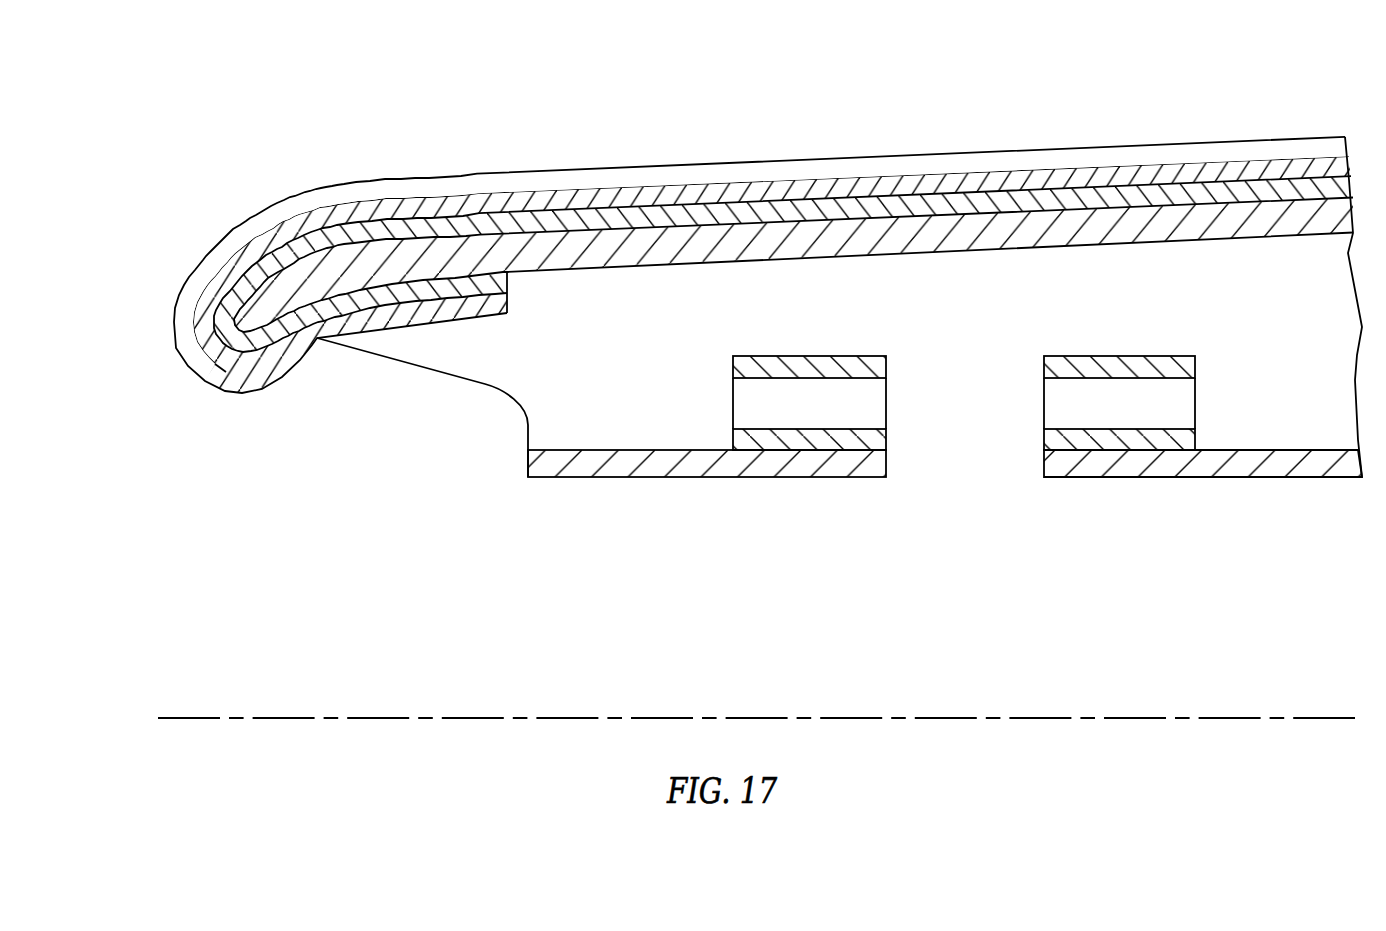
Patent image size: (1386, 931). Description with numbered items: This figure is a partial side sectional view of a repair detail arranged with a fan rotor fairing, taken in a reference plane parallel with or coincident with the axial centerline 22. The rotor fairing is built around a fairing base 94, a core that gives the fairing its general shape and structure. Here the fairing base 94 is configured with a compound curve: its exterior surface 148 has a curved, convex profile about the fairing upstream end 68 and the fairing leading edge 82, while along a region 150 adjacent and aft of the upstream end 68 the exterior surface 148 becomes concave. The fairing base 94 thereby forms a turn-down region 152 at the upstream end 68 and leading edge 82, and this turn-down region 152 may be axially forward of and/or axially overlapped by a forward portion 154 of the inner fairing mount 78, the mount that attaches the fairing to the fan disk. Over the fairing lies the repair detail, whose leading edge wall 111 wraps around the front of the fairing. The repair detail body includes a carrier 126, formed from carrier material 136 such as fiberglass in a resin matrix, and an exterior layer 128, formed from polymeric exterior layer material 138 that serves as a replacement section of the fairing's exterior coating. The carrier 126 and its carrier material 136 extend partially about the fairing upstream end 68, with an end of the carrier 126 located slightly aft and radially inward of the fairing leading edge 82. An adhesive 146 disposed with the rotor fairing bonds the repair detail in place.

The axial centerline 22 is at (1338, 717).
The forward, upstream end 68 is at (149, 337).
The fairing leading edge 82 is at (171, 324).
The inner fairing mount 78 is at (512, 432).
The fairing base 94 is at (1220, 227).
The leading edge wall 111 is at (175, 265).
The carrier 126 is at (762, 240).
The carrier material 136 is at (717, 190).
The exterior layer 128 is at (761, 222).
The exterior layer material 138 is at (607, 167).
The adhesive 146 is at (837, 205).
The exterior surface 148 is at (253, 285).
The region 150 is at (304, 329).
The turn-down region 152 is at (257, 405).
The forward portion 154 is at (399, 386).